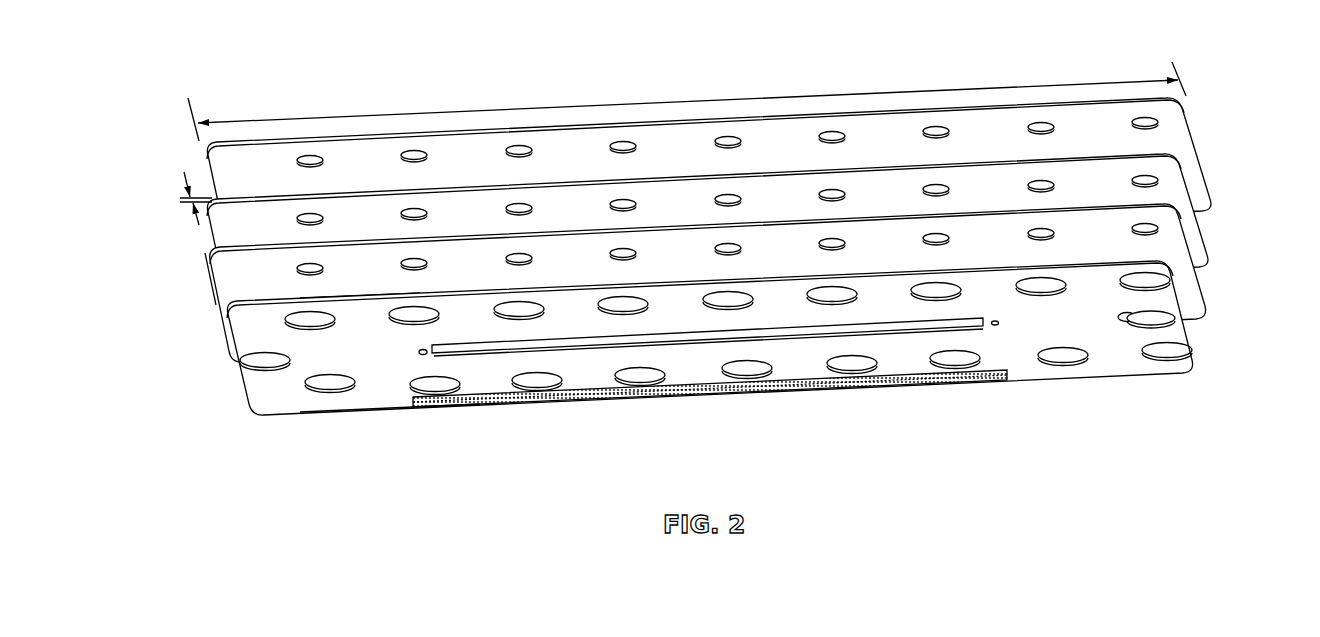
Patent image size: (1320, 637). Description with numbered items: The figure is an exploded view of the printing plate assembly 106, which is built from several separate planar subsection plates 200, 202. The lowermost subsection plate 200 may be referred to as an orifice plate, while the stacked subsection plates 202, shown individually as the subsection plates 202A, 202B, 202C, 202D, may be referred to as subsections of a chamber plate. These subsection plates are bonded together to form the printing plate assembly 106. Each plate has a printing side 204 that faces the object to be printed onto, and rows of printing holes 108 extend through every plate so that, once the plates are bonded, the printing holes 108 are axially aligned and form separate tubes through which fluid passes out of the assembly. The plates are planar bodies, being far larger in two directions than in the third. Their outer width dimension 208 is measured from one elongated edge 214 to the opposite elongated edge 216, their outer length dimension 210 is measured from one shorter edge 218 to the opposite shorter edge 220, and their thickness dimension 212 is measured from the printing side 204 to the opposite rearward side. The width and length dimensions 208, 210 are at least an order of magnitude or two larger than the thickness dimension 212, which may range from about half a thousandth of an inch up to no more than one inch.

The printing plate assembly 106 is at (693, 252).
The printing holes 108 is at (747, 393).
The subsection plate 200 is at (734, 404).
The subsection plates 202 is at (729, 265).
The subsection plate 202A is at (724, 326).
The subsection plate 202B is at (729, 283).
The subsection plate 202C is at (1208, 215).
The subsection plate 202D is at (1200, 141).
The printing side 204 is at (655, 306).
The outer width dimension 208 is at (654, 283).
The outer length dimension 210 is at (663, 103).
The thickness dimension 212 is at (167, 191).
The elongated edge 214 is at (360, 294).
The elongated edge 216 is at (386, 411).
The shorter edge 218 is at (204, 279).
The shorter edge 220 is at (1213, 281).